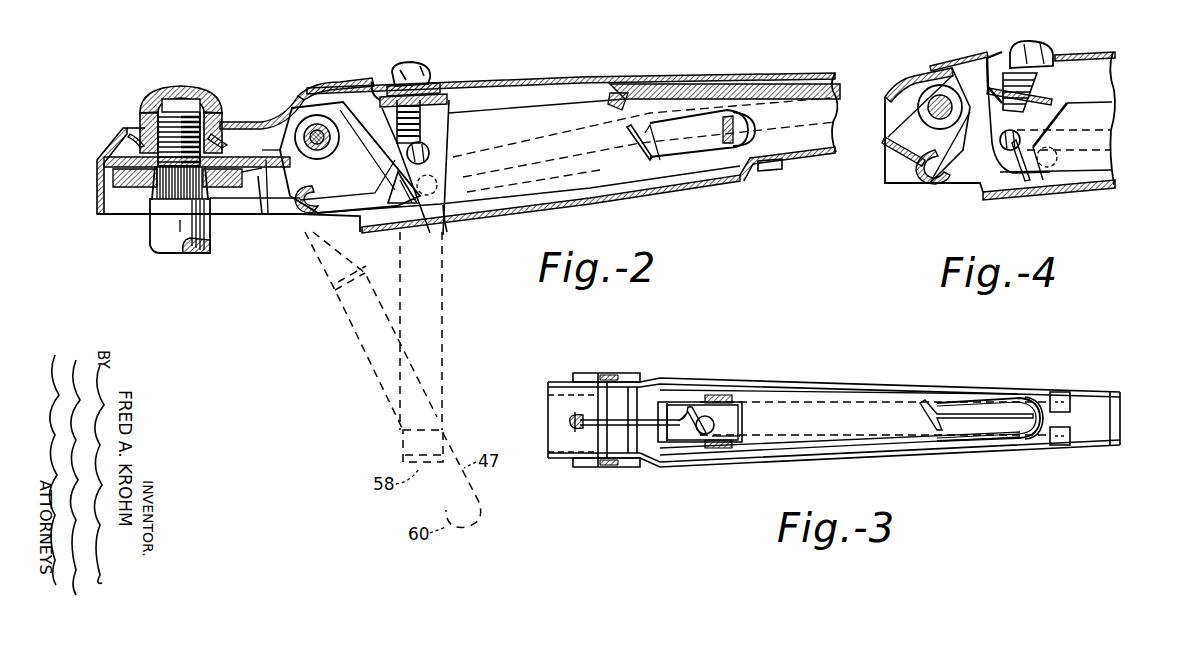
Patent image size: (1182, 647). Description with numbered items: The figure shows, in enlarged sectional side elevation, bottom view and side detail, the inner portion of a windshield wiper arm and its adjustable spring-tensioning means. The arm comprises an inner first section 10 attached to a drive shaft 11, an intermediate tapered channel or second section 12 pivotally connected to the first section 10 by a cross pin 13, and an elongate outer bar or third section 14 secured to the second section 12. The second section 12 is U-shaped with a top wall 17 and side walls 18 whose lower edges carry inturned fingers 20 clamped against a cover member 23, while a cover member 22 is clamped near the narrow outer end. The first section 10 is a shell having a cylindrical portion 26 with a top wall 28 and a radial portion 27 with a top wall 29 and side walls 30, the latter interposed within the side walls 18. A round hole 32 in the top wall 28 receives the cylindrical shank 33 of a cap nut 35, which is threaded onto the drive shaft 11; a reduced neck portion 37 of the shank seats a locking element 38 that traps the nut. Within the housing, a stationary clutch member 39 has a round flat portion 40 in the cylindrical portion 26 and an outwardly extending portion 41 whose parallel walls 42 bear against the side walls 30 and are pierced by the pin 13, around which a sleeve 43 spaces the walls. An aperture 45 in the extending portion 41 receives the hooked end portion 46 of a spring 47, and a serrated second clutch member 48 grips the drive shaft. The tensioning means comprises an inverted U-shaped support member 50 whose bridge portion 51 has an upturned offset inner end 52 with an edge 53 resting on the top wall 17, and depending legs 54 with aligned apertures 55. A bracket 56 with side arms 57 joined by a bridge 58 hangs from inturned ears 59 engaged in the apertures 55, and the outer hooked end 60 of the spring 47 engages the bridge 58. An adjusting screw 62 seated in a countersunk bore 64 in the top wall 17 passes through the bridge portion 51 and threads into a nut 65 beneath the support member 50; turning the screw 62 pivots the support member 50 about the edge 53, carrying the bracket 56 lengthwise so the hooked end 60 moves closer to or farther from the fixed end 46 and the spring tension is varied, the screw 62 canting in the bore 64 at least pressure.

In FIG. 2, the first section 10 is at (94, 151).
In FIG. 2, the drive shaft 11 is at (158, 238).
In FIG. 2, the second section 12 is at (658, 71).
In FIG. 4, the second section 12 is at (972, 54).
In FIG. 2, the cross pin 13 is at (304, 150).
In FIG. 3, the cross pin 13 is at (600, 470).
In FIG. 2, the third section 14 is at (843, 84).
In FIG. 2, the top wall 17 is at (722, 76).
In FIG. 4, the top wall 17 is at (1078, 54).
In FIG. 2, the side walls 18 is at (566, 80).
In FIG. 3, the side walls 18 is at (812, 380).
In FIG. 2, the fingers 20 is at (776, 171).
In FIG. 3, the fingers 20 is at (1065, 392).
In FIG. 2, the cover member 22 is at (808, 150).
In FIG. 3, the cover member 22 is at (1108, 440).
In FIG. 2, the cover member 23 is at (609, 197).
In FIG. 2, the cylindrical portion 26 is at (97, 202).
In FIG. 2, the radially extending portion 27 is at (300, 98).
In FIG. 2, the top wall 28 is at (140, 122).
In FIG. 2, the top wall 29 is at (236, 122).
In FIG. 2, the side walls 30 is at (266, 222).
In FIG. 3, the side walls 30 is at (640, 385).
In FIG. 2, the round hole 32 is at (205, 110).
In FIG. 2, the cylindrical shank 33 is at (160, 102).
In FIG. 2, the cap nut 35 is at (180, 86).
In FIG. 2, the reduced neck portion 37 is at (226, 143).
In FIG. 2, the locking element 38 is at (128, 136).
In FIG. 2, the clutch member 39 is at (259, 193).
In FIG. 2, the round flat portion 40 is at (112, 180).
In FIG. 2, the outwardly extending portion 41 is at (270, 222).
In FIG. 2, the parallel walls 42 is at (335, 170).
In FIG. 3, the parallel walls 42 is at (636, 385).
In FIG. 2, the sleeve 43 is at (326, 139).
In FIG. 3, the sleeve 43 is at (625, 390).
In FIG. 2, the aperture 45 is at (310, 188).
In FIG. 3, the aperture 45 is at (568, 418).
In FIG. 2, the hooked end portion 46 is at (318, 212).
In FIG. 3, the hooked end portion 46 is at (568, 427).
In FIG. 2, the spring 47 is at (650, 163).
In FIG. 3, the spring 47 is at (932, 404).
In FIG. 2, the second clutch member 48 is at (130, 195).
In FIG. 2, the support member 50 is at (458, 119).
In FIG. 3, the support member 50 is at (750, 392).
In FIG. 2, the bridge portion 51 is at (449, 102).
In FIG. 3, the bridge portion 51 is at (742, 425).
In FIG. 4, the bridge portion 51 is at (1062, 88).
In FIG. 2, the upturned offset inner end 52 is at (378, 95).
In FIG. 3, the upturned offset inner end 52 is at (672, 402).
In FIG. 4, the upturned offset inner end 52 is at (972, 62).
In FIG. 2, the edge 53 is at (372, 85).
In FIG. 4, the edge 53 is at (1000, 52).
In FIG. 2, the legs 54 is at (434, 138).
In FIG. 4, the legs 54 is at (1042, 118).
In FIG. 2, the apertures 55 is at (430, 160).
In FIG. 3, the apertures 55 is at (718, 368).
In FIG. 4, the apertures 55 is at (1000, 178).
In FIG. 2, the bracket 56 is at (571, 126).
In FIG. 3, the bracket 56 is at (858, 383).
In FIG. 4, the bracket 56 is at (1103, 108).
In FIG. 2, the side arms 57 is at (640, 90).
In FIG. 3, the side arms 57 is at (896, 392).
In FIG. 2, the bridge 58 is at (722, 133).
In FIG. 3, the bridge 58 is at (1035, 400).
In FIG. 2, the ears 59 is at (447, 232).
In FIG. 3, the ears 59 is at (716, 395).
In FIG. 2, the hooked end 60 is at (755, 128).
In FIG. 3, the hooked end 60 is at (1025, 445).
In FIG. 2, the adjusting screw 62 is at (420, 66).
In FIG. 4, the adjusting screw 62 is at (1040, 40).
In FIG. 2, the countersunk bore 64 is at (410, 64).
In FIG. 3, the countersunk bore 64 is at (715, 423).
In FIG. 2, the nut 65 is at (380, 102).
In FIG. 3, the nut 65 is at (740, 440).